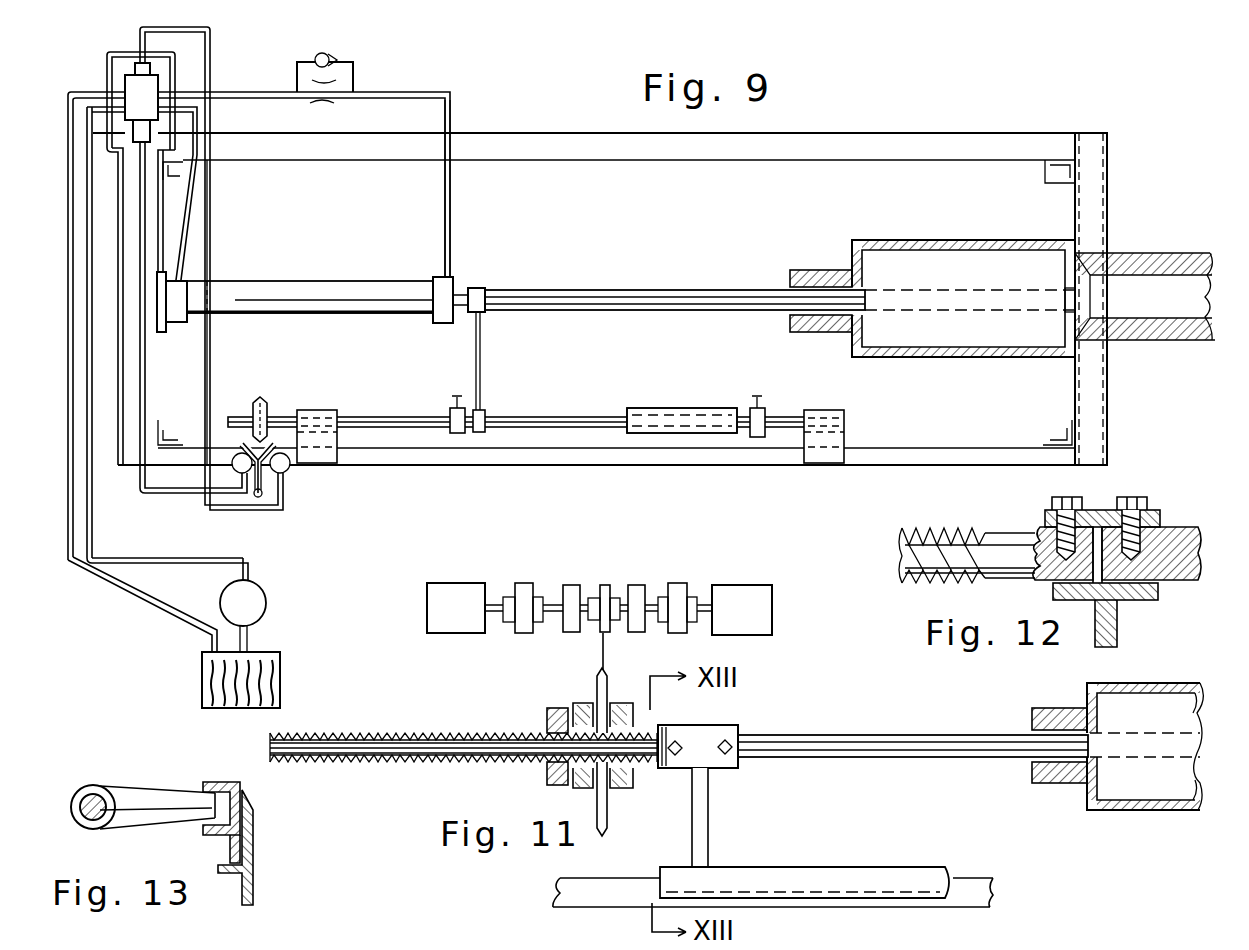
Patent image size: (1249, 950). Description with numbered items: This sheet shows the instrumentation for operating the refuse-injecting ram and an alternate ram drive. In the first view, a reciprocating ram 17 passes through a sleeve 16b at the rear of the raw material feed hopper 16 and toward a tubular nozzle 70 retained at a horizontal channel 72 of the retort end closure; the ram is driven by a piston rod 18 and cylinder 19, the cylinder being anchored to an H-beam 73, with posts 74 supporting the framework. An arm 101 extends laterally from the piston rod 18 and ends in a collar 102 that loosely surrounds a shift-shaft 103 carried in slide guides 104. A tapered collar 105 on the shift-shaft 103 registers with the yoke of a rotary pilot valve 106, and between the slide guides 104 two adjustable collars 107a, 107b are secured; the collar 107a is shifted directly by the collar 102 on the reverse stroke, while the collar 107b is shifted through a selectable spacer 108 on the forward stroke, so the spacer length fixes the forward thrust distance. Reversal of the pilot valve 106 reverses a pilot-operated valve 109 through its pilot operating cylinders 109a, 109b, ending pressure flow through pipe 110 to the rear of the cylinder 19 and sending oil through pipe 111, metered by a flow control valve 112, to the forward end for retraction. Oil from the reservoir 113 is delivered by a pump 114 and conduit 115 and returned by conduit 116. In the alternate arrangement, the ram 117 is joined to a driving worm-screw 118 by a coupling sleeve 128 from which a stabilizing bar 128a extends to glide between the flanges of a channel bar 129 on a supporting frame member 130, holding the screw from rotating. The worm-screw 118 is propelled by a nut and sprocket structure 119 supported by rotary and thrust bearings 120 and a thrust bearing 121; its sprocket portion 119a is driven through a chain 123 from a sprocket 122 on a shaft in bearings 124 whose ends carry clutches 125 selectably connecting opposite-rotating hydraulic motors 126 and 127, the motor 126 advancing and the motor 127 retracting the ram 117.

In FIG. 9, the raw material feed hopper 16 is at (996, 285).
In FIG. 11, the raw material feed hopper 16 is at (1160, 726).
In FIG. 9, the sleeve 16b is at (800, 270).
In FIG. 11, the sleeve 16b is at (1048, 708).
In FIG. 9, the reciprocating ram 17 is at (632, 290).
In FIG. 9, the piston rod 18 is at (473, 288).
In FIG. 9, the cylinder 19 is at (381, 281).
In FIG. 9, the tubular nozzle 70 is at (1150, 253).
In FIG. 9, the horizontal channel 72 is at (1075, 212).
In FIG. 9, the H-beam 73 is at (123, 467).
In FIG. 9, the posts 74 is at (1059, 173).
In FIG. 9, the arm 101 is at (482, 354).
In FIG. 9, the collar 102 is at (486, 410).
In FIG. 9, the shift-shaft 103 is at (607, 415).
In FIG. 9, the slide guides 104 is at (320, 410).
In FIG. 9, the tapered collar 105 is at (263, 400).
In FIG. 9, the rotary pilot valve 106 is at (279, 467).
In FIG. 9, the collar 107a is at (460, 434).
In FIG. 9, the collar 107b is at (757, 438).
In FIG. 9, the spacer 108 is at (705, 408).
In FIG. 9, the pilot-operated valve 109 is at (148, 92).
In FIG. 9, the pilot operating cylinder 109a is at (133, 68).
In FIG. 9, the pilot operating cylinder 109b is at (152, 133).
In FIG. 9, the pipe 110 is at (191, 216).
In FIG. 9, the pipe 111 is at (451, 201).
In FIG. 9, the flow control valve 112 is at (338, 58).
In FIG. 9, the reservoir 113 is at (281, 668).
In FIG. 9, the pump 114 is at (264, 596).
In FIG. 9, the conduit 115 is at (140, 560).
In FIG. 9, the conduit 116 is at (160, 611).
In FIG. 11, the ram 117 is at (910, 735).
In FIG. 12, the ram 117 is at (1185, 527).
In FIG. 11, the worm-screw 118 is at (388, 735).
In FIG. 12, the worm-screw 118 is at (955, 531).
In FIG. 13, the worm-screw 118 is at (78, 805).
In FIG. 11, the nut and sprocket structure 119 is at (578, 705).
In FIG. 11, the sprocket portion 119a is at (607, 690).
In FIG. 11, the rotary and thrust bearings 120 is at (618, 788).
In FIG. 11, the thrust bearing 121 is at (547, 713).
In FIG. 11, the sprocket 122 is at (609, 585).
In FIG. 11, the chain 123 is at (600, 670).
In FIG. 11, the bearings 124 is at (571, 585).
In FIG. 11, the clutches 125 is at (521, 583).
In FIG. 11, the hydraulic motor 126 is at (452, 583).
In FIG. 11, the hydraulic motor 127 is at (770, 590).
In FIG. 11, the coupling sleeve 128 is at (722, 727).
In FIG. 12, the coupling sleeve 128 is at (1095, 510).
In FIG. 13, the coupling sleeve 128 is at (100, 796).
In FIG. 11, the stabilizing bar 128a is at (708, 805).
In FIG. 12, the stabilizing bar 128a is at (1118, 626).
In FIG. 13, the stabilizing bar 128a is at (160, 788).
In FIG. 11, the channel bar 129 is at (852, 867).
In FIG. 13, the channel bar 129 is at (213, 783).
In FIG. 11, the supporting frame member 130 is at (625, 878).
In FIG. 13, the supporting frame member 130 is at (254, 878).